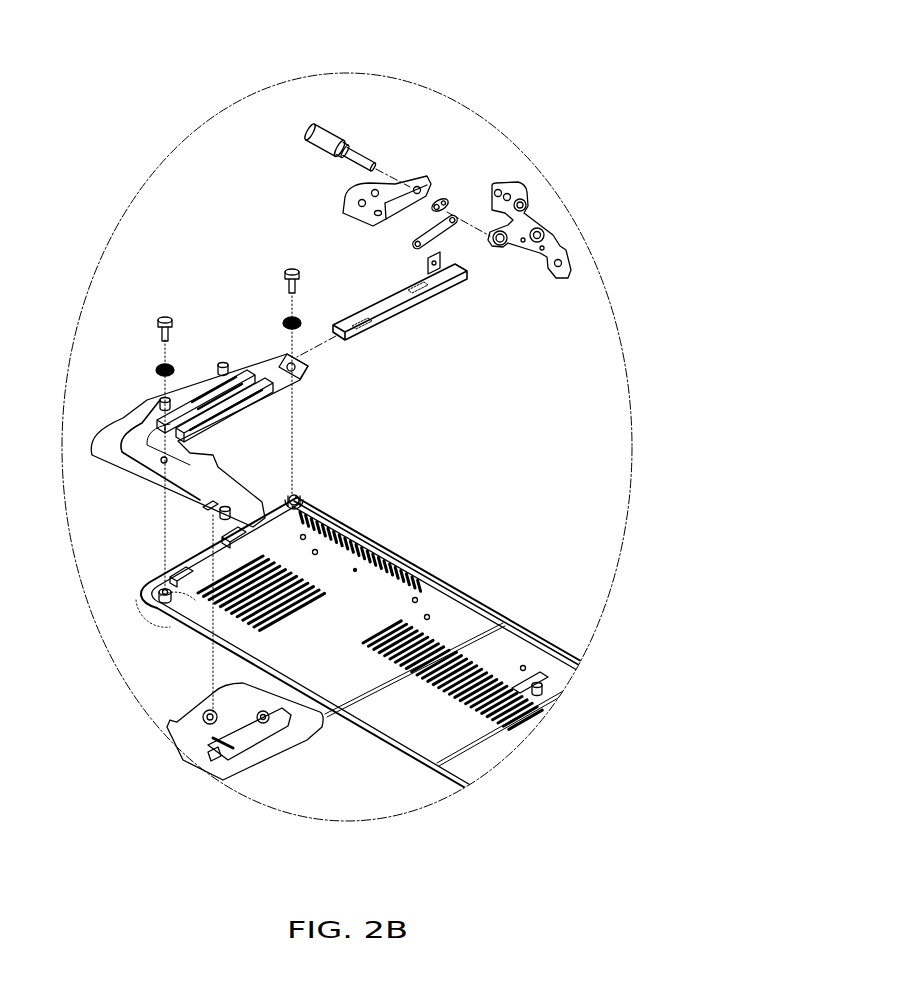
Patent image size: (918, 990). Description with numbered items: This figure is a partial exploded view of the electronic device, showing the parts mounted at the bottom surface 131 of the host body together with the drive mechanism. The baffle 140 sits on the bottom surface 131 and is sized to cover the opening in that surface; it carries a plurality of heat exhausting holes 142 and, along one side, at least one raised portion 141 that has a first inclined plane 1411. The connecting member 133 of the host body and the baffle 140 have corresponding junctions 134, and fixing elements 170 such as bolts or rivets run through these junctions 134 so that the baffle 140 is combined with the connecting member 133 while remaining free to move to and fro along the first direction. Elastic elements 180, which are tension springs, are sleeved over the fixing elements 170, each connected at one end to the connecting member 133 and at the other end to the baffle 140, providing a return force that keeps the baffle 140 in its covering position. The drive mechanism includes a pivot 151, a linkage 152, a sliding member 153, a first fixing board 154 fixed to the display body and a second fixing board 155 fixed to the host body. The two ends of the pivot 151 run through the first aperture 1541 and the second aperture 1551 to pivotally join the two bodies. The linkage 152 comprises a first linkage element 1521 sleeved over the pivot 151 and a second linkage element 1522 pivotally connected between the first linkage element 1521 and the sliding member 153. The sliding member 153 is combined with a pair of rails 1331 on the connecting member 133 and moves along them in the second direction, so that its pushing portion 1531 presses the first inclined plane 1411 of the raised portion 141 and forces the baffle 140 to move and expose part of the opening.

The bottom surface 131 is at (176, 737).
The connecting member 133 is at (159, 440).
The rails 1331 is at (242, 413).
The junctions 134 is at (300, 372).
The baffle 140 is at (562, 667).
The raised portion 141 is at (228, 533).
The first inclined plane 1411 is at (176, 571).
The heat exhausting holes 142 is at (500, 655).
The pivot 151 is at (331, 130).
The linkage 152 is at (484, 137).
The first linkage element 1521 is at (445, 196).
The second linkage element 1522 is at (458, 216).
The sliding member 153 is at (408, 295).
The pushing portion 1531 is at (420, 298).
The first fixing board 154 is at (545, 232).
The first aperture 1541 is at (504, 246).
The second fixing board 155 is at (360, 173).
The second aperture 1551 is at (423, 181).
The fixing elements 170 is at (285, 276).
The elastic elements 180 is at (283, 323).